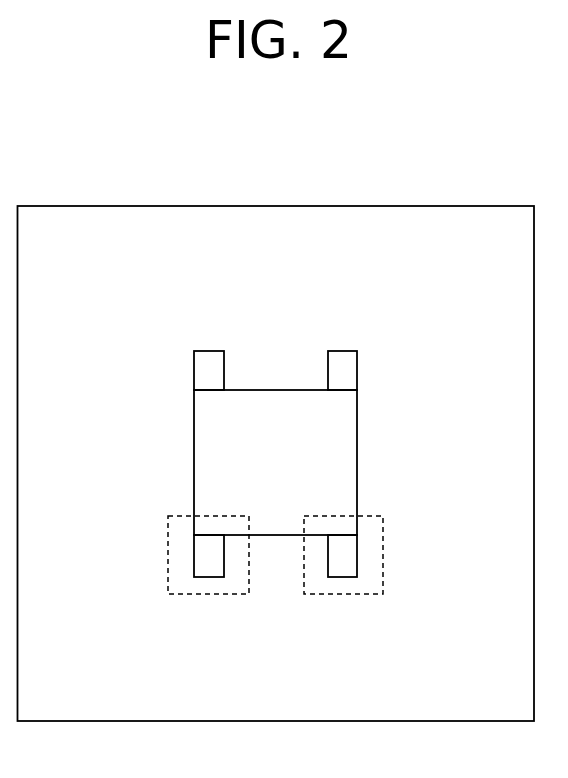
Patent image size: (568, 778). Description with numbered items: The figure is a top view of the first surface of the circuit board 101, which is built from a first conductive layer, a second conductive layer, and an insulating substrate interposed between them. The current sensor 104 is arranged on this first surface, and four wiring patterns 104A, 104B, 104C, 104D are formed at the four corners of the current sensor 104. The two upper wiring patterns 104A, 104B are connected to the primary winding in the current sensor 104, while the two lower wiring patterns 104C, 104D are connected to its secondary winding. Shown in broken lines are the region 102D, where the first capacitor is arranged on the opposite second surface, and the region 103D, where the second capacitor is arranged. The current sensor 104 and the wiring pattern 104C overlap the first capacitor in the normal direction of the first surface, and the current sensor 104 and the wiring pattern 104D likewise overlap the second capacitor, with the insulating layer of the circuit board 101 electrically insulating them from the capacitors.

The circuit board 101 is at (352, 205).
The current sensor 104 is at (358, 450).
The wiring pattern 104A is at (224, 351).
The wiring pattern 104B is at (358, 351).
The wiring pattern 104C is at (194, 553).
The wiring pattern 104D is at (358, 553).
The region 102D is at (176, 516).
The region 103D is at (380, 516).